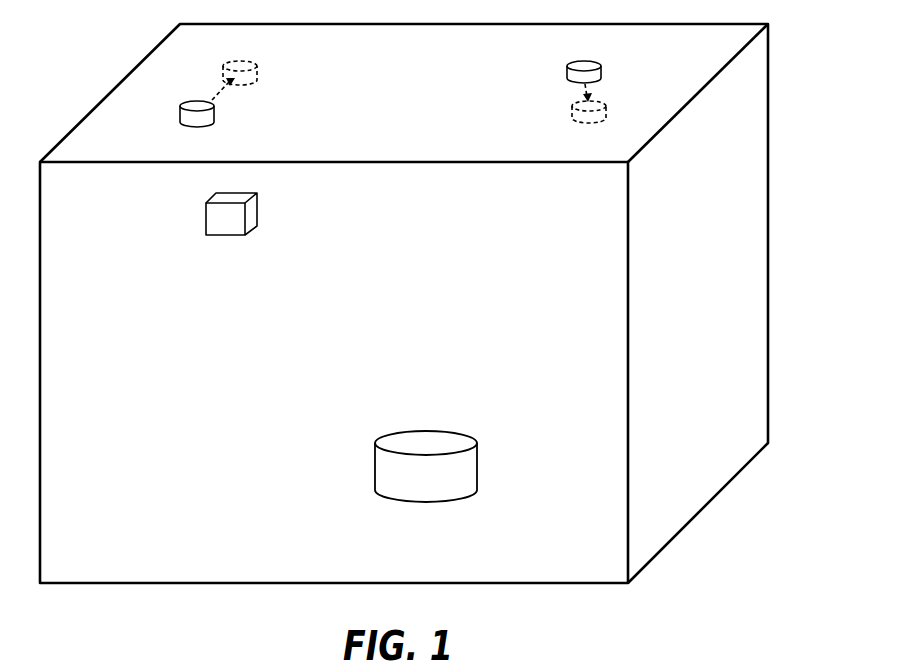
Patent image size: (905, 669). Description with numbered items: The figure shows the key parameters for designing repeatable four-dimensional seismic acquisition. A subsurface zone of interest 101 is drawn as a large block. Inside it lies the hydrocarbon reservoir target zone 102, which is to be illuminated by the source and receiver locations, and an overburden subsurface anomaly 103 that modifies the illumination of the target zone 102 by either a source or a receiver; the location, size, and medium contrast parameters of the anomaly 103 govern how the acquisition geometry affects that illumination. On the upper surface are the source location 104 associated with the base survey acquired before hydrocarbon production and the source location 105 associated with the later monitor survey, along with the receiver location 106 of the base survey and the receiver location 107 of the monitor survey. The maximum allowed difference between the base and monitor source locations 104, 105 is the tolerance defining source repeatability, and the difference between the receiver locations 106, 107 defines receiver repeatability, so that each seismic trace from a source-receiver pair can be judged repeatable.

The subsurface zone of interest 101 is at (783, 283).
The hydrocarbon reservoir target zone 102 is at (470, 495).
The overburden subsurface anomaly 103 is at (208, 202).
The source location 104 is at (195, 102).
The source location 105 is at (252, 63).
The receiver location 106 is at (570, 63).
The receiver location 107 is at (580, 121).